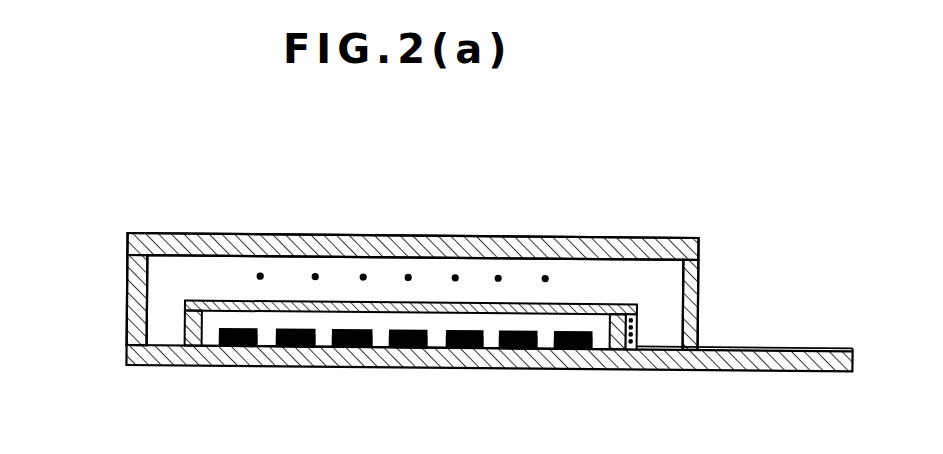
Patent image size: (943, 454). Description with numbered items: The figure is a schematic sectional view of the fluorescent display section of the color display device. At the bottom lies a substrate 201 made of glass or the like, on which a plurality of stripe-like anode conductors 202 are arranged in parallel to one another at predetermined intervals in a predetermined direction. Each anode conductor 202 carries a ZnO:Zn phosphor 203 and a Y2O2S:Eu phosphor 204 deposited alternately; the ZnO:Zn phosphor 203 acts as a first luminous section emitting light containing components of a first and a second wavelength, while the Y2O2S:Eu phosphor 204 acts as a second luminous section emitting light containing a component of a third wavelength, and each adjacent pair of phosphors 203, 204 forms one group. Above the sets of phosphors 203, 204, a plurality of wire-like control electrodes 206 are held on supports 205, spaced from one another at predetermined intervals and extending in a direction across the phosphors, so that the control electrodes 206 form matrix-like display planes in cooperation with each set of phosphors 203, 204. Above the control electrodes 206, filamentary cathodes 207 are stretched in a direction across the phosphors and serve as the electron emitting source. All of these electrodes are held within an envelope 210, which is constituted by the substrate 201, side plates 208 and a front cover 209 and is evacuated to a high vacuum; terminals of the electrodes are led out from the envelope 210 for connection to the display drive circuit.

The substrate 201 is at (750, 374).
The anode conductors 202 is at (470, 346).
The ZnO:Zn phosphor 203 is at (238, 344).
The Y2O2S:Eu phosphor 204 is at (300, 348).
The supports 205 is at (188, 324).
The control electrodes 206 is at (437, 300).
The filamentary cathodes 207 is at (313, 271).
The side plates 208 is at (127, 302).
The front cover 209 is at (207, 233).
The envelope 210 is at (668, 236).